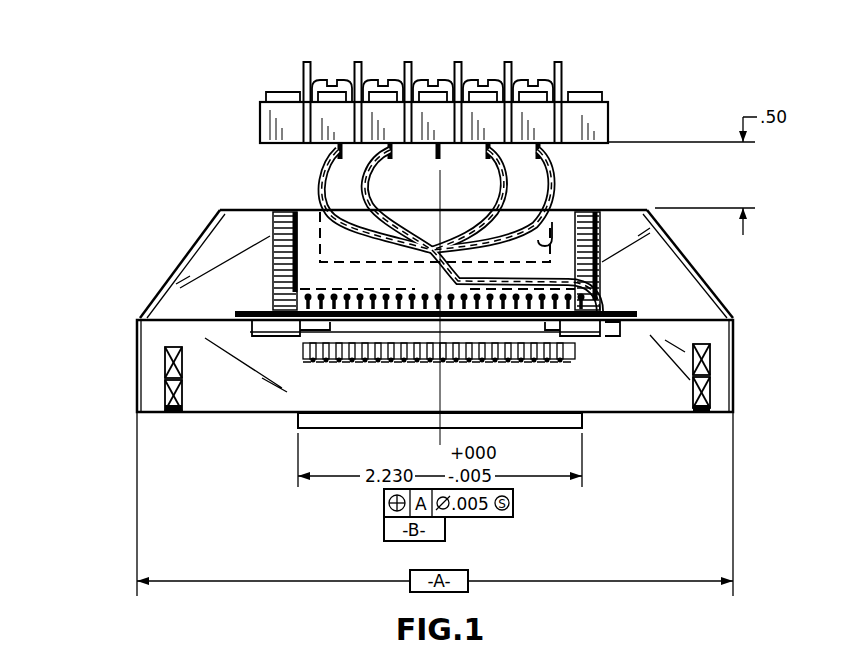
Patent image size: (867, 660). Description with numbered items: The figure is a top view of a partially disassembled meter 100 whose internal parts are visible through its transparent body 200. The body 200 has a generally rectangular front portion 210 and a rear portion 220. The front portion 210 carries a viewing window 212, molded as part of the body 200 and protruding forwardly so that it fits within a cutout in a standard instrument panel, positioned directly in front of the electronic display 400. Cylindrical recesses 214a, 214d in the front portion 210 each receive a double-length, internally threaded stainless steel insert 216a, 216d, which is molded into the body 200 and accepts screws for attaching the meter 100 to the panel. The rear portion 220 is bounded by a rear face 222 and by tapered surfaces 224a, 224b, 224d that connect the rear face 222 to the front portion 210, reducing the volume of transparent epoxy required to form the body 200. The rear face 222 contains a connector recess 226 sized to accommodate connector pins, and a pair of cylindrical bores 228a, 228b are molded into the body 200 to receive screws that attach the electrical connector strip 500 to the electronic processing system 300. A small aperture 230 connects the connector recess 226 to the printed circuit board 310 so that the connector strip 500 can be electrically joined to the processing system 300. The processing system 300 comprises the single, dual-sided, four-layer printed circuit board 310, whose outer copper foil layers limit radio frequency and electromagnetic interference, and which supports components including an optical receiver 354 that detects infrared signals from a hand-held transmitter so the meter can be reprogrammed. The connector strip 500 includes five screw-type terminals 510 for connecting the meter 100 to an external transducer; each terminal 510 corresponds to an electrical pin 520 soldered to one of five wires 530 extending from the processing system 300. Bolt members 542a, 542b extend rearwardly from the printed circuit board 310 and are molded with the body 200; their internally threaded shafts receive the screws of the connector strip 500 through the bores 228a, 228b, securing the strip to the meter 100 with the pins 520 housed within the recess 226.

The meter 100 is at (126, 277).
The transparent body 200 is at (432, 235).
The front portion 210 is at (135, 354).
The viewing window 212 is at (298, 420).
The cylindrical recess 214a is at (174, 414).
The cylindrical recess 214d is at (703, 412).
The stainless steel insert 216a is at (164, 383).
The stainless steel insert 216d is at (711, 378).
The rear portion 220 is at (432, 236).
The rear face 222 is at (642, 208).
The tapered surface 224a is at (208, 238).
The tapered surface 224b is at (176, 270).
The tapered surface 224d is at (680, 237).
The connector recess 226 is at (554, 222).
The cylindrical bore 228a is at (586, 210).
The cylindrical bore 228b is at (276, 216).
The aperture 230 is at (430, 250).
The electronic processing system 300 is at (446, 373).
The printed circuit board 310 is at (240, 313).
The optical receiver 354 is at (607, 340).
The electronic display 400 is at (577, 362).
The electrical connector strip 500 is at (473, 90).
The screw-type terminal 510 is at (322, 96).
The electrical pin 520 is at (332, 151).
The wire 530 is at (332, 157).
The bolt member 542a is at (593, 338).
The bolt member 542b is at (430, 250).